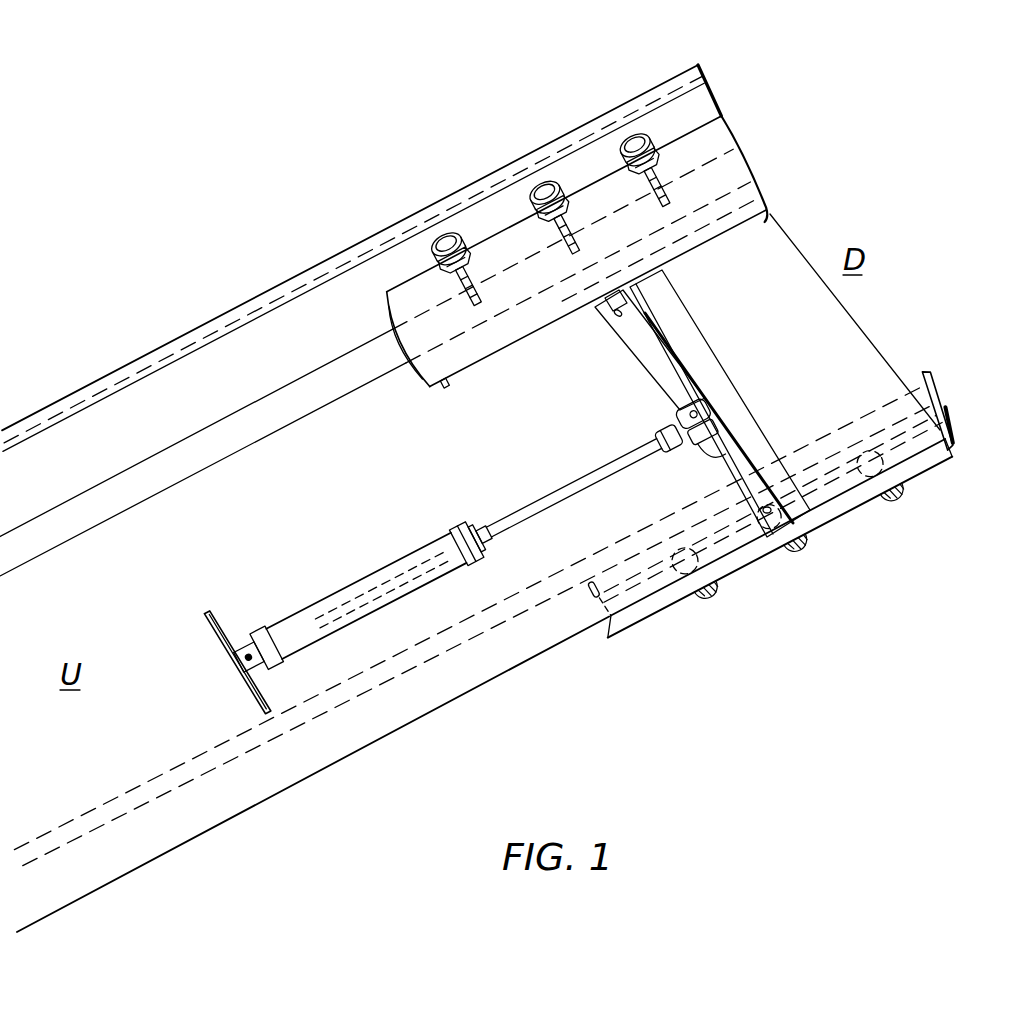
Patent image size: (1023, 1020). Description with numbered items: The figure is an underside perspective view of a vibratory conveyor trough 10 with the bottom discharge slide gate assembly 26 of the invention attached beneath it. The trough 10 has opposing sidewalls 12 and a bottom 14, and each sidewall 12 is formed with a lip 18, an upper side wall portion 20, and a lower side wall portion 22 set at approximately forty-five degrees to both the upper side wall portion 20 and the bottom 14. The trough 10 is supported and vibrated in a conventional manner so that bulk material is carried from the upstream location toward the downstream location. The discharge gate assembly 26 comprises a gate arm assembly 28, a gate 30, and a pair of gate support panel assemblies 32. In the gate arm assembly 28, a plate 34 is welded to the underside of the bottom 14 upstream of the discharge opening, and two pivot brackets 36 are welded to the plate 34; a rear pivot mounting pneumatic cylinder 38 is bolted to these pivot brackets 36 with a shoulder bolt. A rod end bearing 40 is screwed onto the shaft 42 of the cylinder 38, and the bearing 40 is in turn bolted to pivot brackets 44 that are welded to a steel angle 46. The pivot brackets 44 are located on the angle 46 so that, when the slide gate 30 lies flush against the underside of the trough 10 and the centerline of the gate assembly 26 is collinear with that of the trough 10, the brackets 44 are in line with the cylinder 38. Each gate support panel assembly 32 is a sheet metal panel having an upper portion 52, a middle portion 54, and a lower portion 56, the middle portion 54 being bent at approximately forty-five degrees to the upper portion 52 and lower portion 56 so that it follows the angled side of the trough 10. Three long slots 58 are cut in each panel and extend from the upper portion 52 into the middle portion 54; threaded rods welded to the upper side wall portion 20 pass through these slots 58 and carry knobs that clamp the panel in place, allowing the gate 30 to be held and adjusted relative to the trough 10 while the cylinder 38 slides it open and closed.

The vibratory conveyor trough 10 is at (364, 215).
The sidewall 12 is at (722, 59).
The bottom 14 is at (325, 748).
The lip 18 is at (493, 178).
The upper side wall portion 20 is at (150, 438).
The lower side wall portion 22 is at (110, 520).
The bottom discharge slide gate assembly 26 is at (824, 238).
The gate arm assembly 28 is at (465, 594).
The gate 30 is at (818, 397).
The gate support panel assembly 32 is at (708, 104).
The plate 34 is at (240, 690).
The pivot bracket 36 is at (243, 638).
The pneumatic cylinder 38 is at (440, 538).
The rod end bearing 40 is at (676, 446).
The shaft 42 is at (593, 472).
The pivot bracket 44 is at (676, 412).
The steel angle 46 is at (615, 336).
The upper portion 52 is at (385, 296).
The middle portion 54 is at (407, 345).
The lower portion 56 is at (774, 216).
The long slot 58 is at (468, 304).